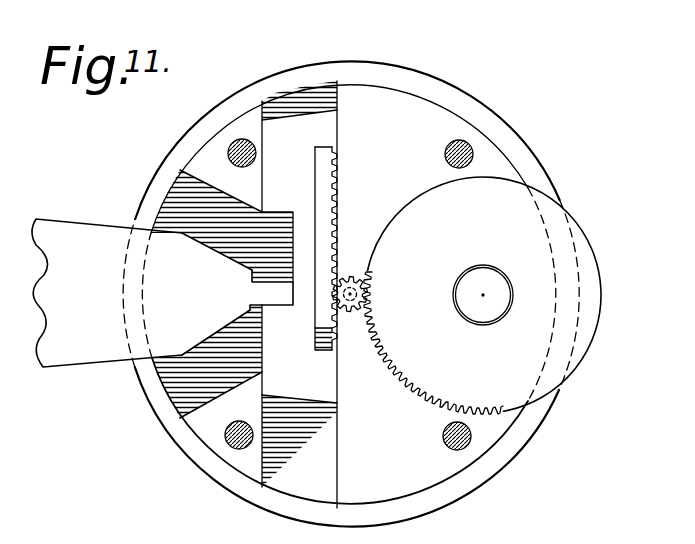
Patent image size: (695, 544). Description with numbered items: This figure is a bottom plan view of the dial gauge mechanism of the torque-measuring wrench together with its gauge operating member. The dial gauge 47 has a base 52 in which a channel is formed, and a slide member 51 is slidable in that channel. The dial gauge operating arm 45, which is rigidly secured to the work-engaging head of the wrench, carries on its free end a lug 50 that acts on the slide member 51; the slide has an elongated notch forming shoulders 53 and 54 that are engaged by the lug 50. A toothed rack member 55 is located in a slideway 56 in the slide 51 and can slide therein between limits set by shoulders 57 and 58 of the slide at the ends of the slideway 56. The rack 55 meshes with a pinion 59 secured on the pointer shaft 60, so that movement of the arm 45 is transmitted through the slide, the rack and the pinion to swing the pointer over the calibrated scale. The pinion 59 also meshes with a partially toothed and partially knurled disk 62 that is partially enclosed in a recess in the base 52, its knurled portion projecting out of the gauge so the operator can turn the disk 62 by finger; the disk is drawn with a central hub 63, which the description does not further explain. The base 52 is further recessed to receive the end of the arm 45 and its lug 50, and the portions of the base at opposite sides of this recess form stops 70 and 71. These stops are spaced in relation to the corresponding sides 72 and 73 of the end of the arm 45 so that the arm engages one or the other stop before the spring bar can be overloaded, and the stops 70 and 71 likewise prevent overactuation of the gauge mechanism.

The dial gauge operating arm 45 is at (65, 235).
The dial gauge 47 is at (236, 88).
The lug 50 is at (278, 294).
The slide member 51 is at (288, 120).
The base 52 is at (410, 472).
The shoulder 53 is at (273, 210).
The shoulder 54 is at (277, 307).
The toothed rack member 55 is at (320, 173).
The slideway 56 is at (318, 340).
The shoulder 57 is at (322, 145).
The shoulder 58 is at (328, 366).
The pinion 59 is at (370, 277).
The pointer shaft 60 is at (350, 303).
The partially toothed and partially knurled disk 62 is at (589, 323).
The gear hub 63 is at (483, 278).
The stop 70 is at (165, 188).
The stop 71 is at (183, 405).
The side of the end of the arm 72 is at (212, 250).
The side of the end of the arm 73 is at (222, 338).